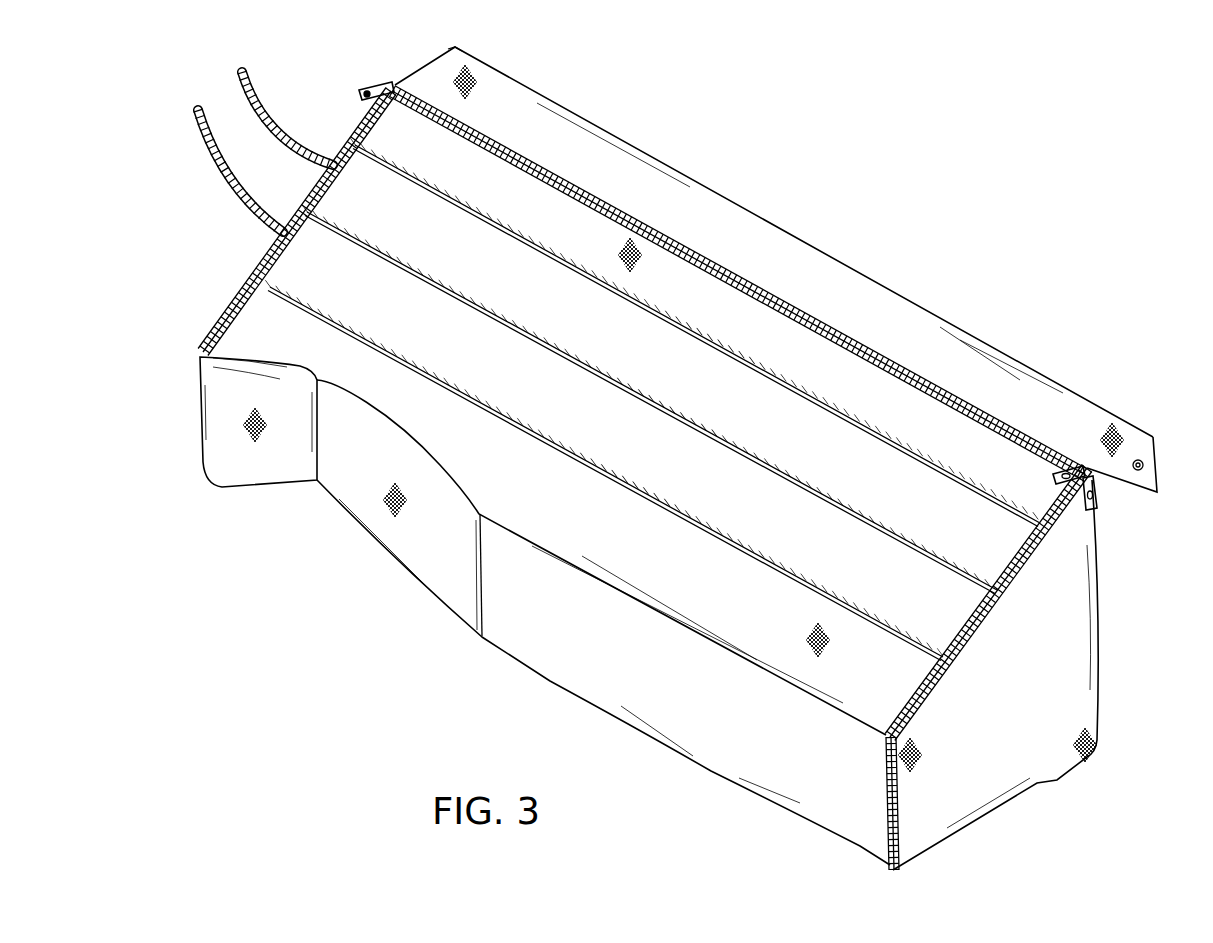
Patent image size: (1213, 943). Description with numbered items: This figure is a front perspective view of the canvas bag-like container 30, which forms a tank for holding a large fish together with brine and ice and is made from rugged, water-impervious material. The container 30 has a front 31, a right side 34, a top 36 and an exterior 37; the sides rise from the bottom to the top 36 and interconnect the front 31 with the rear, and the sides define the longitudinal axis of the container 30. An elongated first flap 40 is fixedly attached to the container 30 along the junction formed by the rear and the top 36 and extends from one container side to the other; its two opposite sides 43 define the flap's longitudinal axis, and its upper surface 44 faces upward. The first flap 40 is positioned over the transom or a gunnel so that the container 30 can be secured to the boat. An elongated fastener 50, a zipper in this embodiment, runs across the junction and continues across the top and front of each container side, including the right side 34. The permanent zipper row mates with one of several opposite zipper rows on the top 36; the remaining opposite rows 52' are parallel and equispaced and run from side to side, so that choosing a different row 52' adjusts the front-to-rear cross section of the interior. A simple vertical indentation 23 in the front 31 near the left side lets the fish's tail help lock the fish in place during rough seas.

The vertical indentation 23 is at (317, 470).
The container 30 is at (991, 157).
The front 31 is at (714, 746).
The right side 34 is at (1090, 718).
The top 36 is at (622, 436).
The exterior 37 is at (1092, 650).
The first flap 40 is at (980, 338).
The flap sides 43 is at (447, 50).
The upper surface 44 is at (1097, 420).
The fastener 50 is at (393, 82).
The remaining opposite zipper rows 52' is at (653, 400).